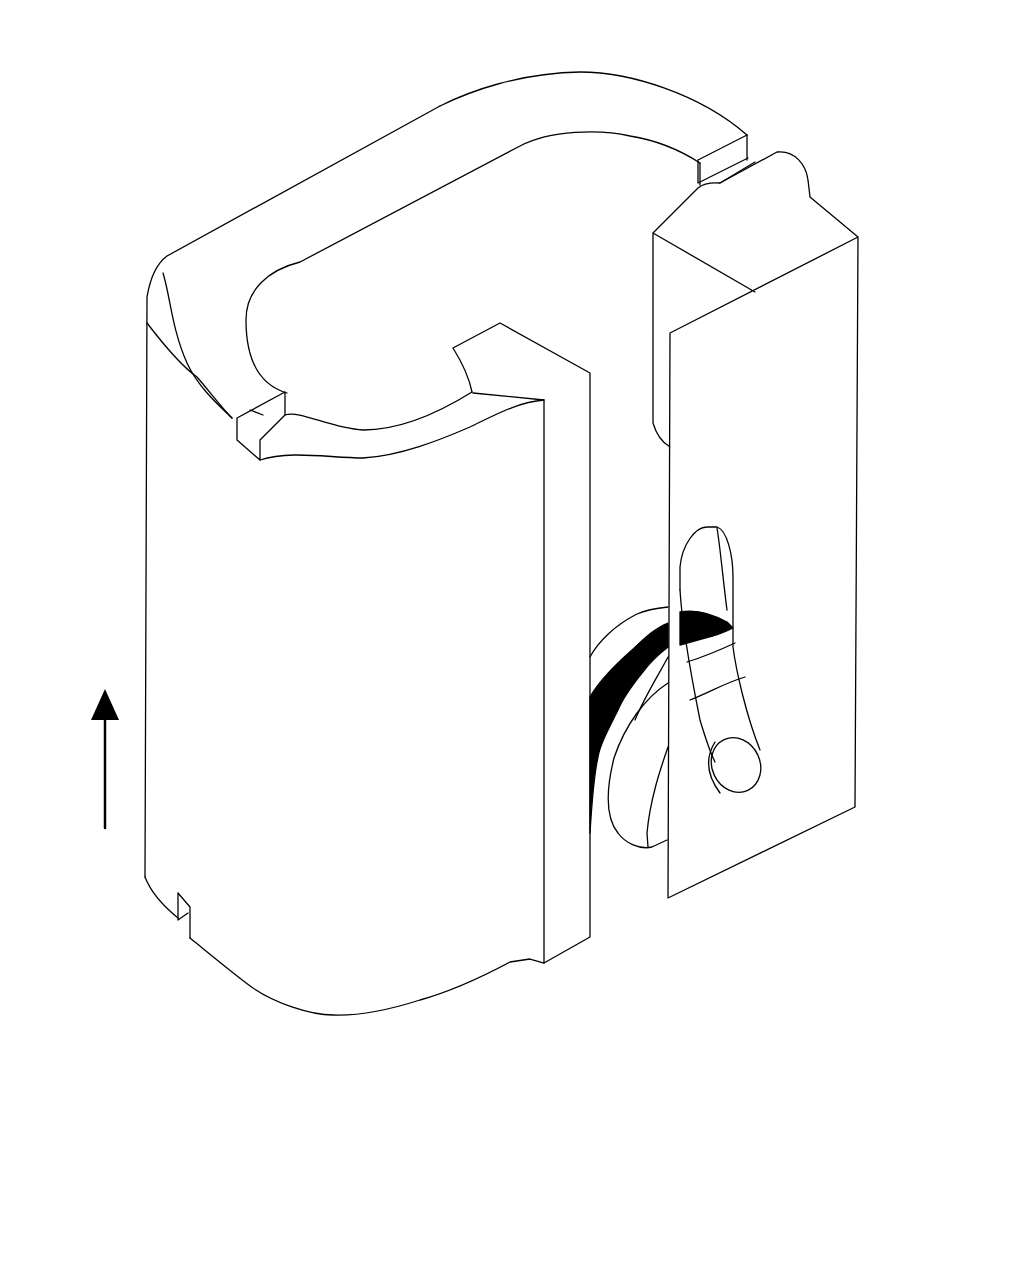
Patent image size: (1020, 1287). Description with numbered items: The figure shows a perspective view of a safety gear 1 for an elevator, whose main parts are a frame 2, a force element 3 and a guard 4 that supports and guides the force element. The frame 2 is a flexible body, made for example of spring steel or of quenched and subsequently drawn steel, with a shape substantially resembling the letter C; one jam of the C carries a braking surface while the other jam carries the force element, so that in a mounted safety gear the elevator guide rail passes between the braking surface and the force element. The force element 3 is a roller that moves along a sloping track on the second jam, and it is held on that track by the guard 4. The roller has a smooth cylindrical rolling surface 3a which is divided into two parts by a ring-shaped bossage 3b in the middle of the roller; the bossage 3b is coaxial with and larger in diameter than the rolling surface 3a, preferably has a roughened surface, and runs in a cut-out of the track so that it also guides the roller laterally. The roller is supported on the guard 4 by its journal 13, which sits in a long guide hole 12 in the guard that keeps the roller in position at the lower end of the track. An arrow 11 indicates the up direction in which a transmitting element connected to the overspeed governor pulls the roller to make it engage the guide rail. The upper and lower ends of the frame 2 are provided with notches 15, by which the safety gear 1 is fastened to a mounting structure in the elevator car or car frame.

The safety gear 1 is at (223, 143).
The frame 2 is at (270, 575).
The force element 3 is at (628, 733).
The rolling surface 3a is at (638, 800).
The ring-shaped bossage 3b is at (638, 663).
The guard 4 is at (832, 408).
The arrow 11 is at (88, 758).
The guide hole 12 is at (740, 700).
The journal 13 is at (733, 773).
The notches 15 is at (160, 268).